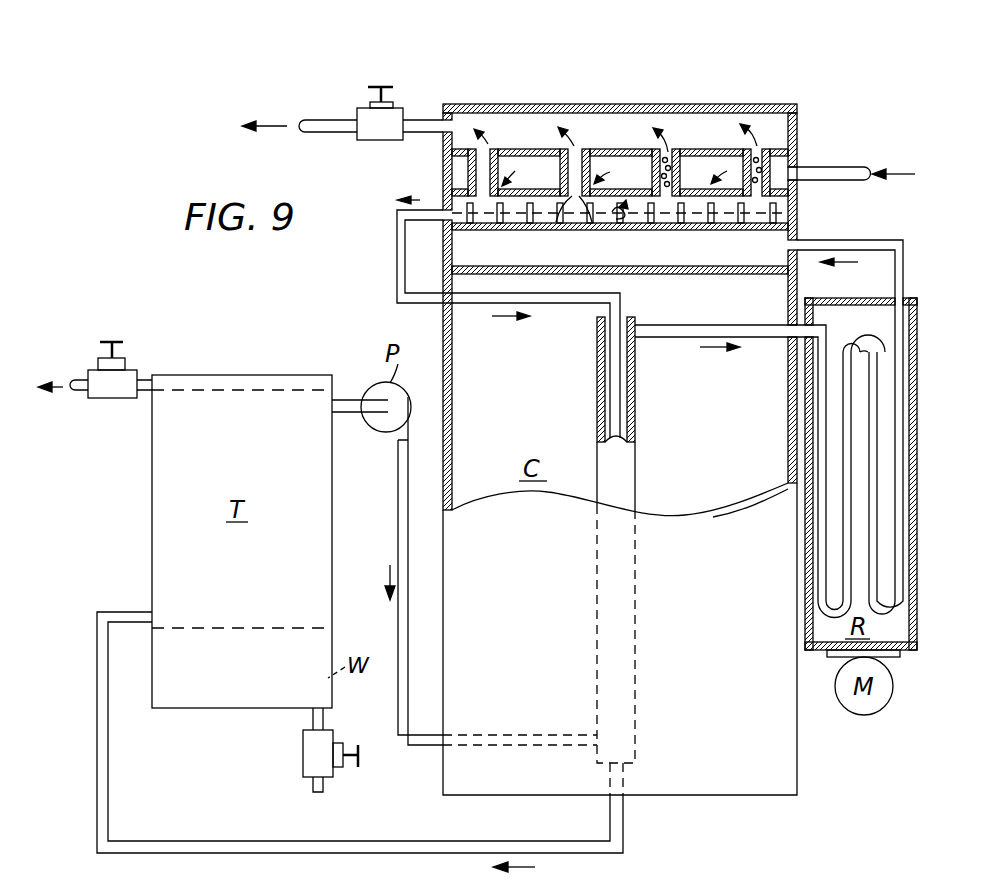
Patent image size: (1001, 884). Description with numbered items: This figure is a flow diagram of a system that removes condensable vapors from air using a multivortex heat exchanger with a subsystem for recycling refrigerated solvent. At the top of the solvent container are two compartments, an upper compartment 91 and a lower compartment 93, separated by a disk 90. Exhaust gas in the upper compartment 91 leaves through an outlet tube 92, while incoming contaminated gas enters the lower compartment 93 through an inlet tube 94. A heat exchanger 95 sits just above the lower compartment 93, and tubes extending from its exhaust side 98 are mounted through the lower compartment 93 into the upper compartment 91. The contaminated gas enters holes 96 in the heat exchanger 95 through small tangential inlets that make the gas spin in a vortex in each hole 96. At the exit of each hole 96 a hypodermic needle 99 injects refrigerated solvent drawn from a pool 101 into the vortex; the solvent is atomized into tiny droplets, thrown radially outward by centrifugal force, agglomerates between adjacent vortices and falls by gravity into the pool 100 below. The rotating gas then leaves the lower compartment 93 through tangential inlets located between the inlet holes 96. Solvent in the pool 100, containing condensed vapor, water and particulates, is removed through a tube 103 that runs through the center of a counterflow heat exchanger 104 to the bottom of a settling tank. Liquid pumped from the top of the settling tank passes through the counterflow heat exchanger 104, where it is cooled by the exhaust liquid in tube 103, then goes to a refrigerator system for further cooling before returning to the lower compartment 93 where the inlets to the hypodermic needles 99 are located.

The disk 90 is at (527, 149).
The upper compartment 91 is at (619, 130).
The outlet tube 92 is at (330, 121).
The lower compartment 93 is at (622, 206).
The inlet tube 94 is at (853, 168).
The heat exchanger 95 is at (773, 188).
The holes 96 is at (577, 228).
The exhaust side 98 is at (784, 209).
The hypodermic needle 99 is at (770, 214).
The pool 100 is at (460, 206).
The pool 101 is at (527, 256).
The tube 103 is at (395, 258).
The counterflow heat exchanger 104 is at (598, 405).